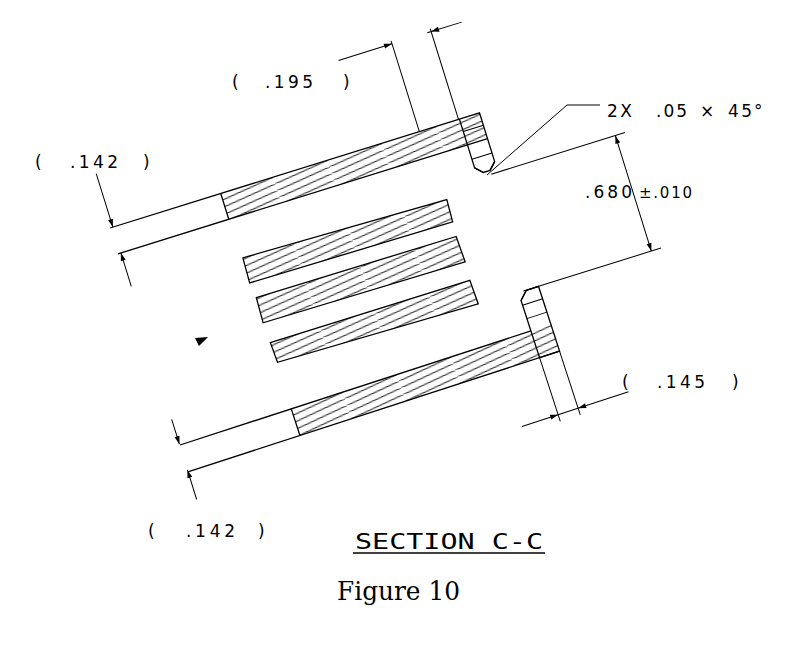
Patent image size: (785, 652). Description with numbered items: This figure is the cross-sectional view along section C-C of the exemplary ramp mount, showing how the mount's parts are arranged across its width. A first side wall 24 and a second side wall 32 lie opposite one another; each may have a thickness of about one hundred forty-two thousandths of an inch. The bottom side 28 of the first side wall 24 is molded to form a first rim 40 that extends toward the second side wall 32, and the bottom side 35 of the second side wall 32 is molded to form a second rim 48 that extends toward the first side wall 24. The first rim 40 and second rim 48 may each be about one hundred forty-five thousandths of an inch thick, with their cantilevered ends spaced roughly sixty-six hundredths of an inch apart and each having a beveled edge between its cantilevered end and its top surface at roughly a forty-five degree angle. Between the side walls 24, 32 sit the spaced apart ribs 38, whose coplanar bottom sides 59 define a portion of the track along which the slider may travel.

The first side wall 24 is at (357, 403).
The bottom side 28 is at (552, 328).
The second side wall 32 is at (253, 192).
The bottom side 35 is at (490, 140).
The ribs 38 is at (200, 341).
The first rim 40 is at (532, 289).
The second rim 48 is at (487, 180).
The bottom side 59 is at (462, 253).